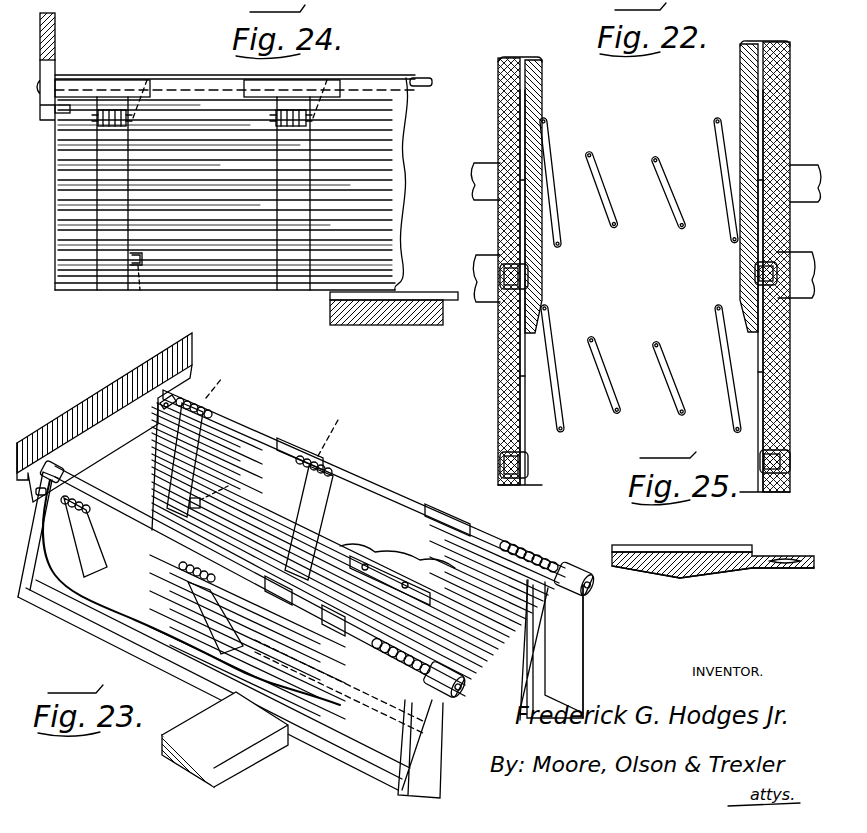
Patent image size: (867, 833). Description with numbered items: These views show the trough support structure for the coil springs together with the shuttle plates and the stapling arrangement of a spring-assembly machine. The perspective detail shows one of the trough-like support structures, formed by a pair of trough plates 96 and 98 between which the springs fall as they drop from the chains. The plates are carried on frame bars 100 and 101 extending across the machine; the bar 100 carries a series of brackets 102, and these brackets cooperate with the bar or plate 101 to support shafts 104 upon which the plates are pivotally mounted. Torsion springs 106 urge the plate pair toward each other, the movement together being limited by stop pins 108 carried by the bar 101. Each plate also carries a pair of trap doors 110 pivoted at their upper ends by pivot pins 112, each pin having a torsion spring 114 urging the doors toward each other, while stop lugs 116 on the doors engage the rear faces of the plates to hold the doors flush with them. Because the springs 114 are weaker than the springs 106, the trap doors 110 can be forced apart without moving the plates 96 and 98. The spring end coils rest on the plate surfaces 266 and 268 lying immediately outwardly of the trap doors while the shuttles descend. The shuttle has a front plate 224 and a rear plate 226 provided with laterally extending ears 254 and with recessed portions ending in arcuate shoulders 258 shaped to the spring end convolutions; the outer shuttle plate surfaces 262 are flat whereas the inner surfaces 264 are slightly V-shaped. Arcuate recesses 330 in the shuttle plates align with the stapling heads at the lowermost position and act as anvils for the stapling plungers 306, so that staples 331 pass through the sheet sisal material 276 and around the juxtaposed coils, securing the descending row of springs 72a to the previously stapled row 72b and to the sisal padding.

In FIG. 24, the frame bar 101 is at (57, 18).
In FIG. 23, the frame bar 101 is at (105, 393).
In FIG. 24, the stop pins 108 is at (59, 107).
In FIG. 23, the stop pins 108 is at (163, 410).
In FIG. 24, the torsion spring 114 is at (103, 110).
In FIG. 23, the torsion spring 114 is at (222, 390).
In FIG. 24, the pivot pins 112 is at (133, 117).
In FIG. 23, the pivot pins 112 is at (222, 390).
In FIG. 24, the shafts 104 is at (421, 78).
In FIG. 23, the shafts 104 is at (66, 476).
In FIG. 24, the trap doors 110 is at (120, 160).
In FIG. 23, the trap doors 110 is at (192, 457).
In FIG. 24, the trough plate 96 is at (385, 162).
In FIG. 23, the trough plate 96 is at (372, 497).
In FIG. 24, the plate surface 266 is at (77, 277).
In FIG. 23, the plate surface 266 is at (170, 442).
In FIG. 24, the stop lugs 116 is at (142, 288).
In FIG. 23, the stop lugs 116 is at (228, 488).
In FIG. 24, the frame bar 100 is at (330, 312).
In FIG. 23, the frame bar 100 is at (227, 743).
In FIG. 22, the sheet sisal material 276 is at (504, 58).
In FIG. 22, the rear plate 226 is at (538, 64).
In FIG. 25, the rear plate 226 is at (693, 578).
In FIG. 22, the front plate 224 is at (750, 77).
In FIG. 22, the row of springs 72a is at (591, 150).
In FIG. 22, the row of springs 72b is at (620, 417).
In FIG. 22, the staples 331 is at (510, 182).
In FIG. 22, the arcuate recesses 330 is at (530, 288).
In FIG. 25, the arcuate recesses 330 is at (781, 560).
In FIG. 22, the stapling plungers 306 is at (800, 170).
In FIG. 25, the shuttle plate surfaces 262 is at (636, 546).
In FIG. 25, the arcuate shoulders 258 is at (740, 546).
In FIG. 25, the ears 254 is at (765, 575).
In FIG. 25, the inner surfaces 264 is at (655, 577).
In FIG. 23, the plate surface 268 is at (323, 543).
In FIG. 23, the torsion springs 106 is at (405, 655).
In FIG. 23, the trough plate 98 is at (143, 595).
In FIG. 23, the brackets 102 is at (577, 655).